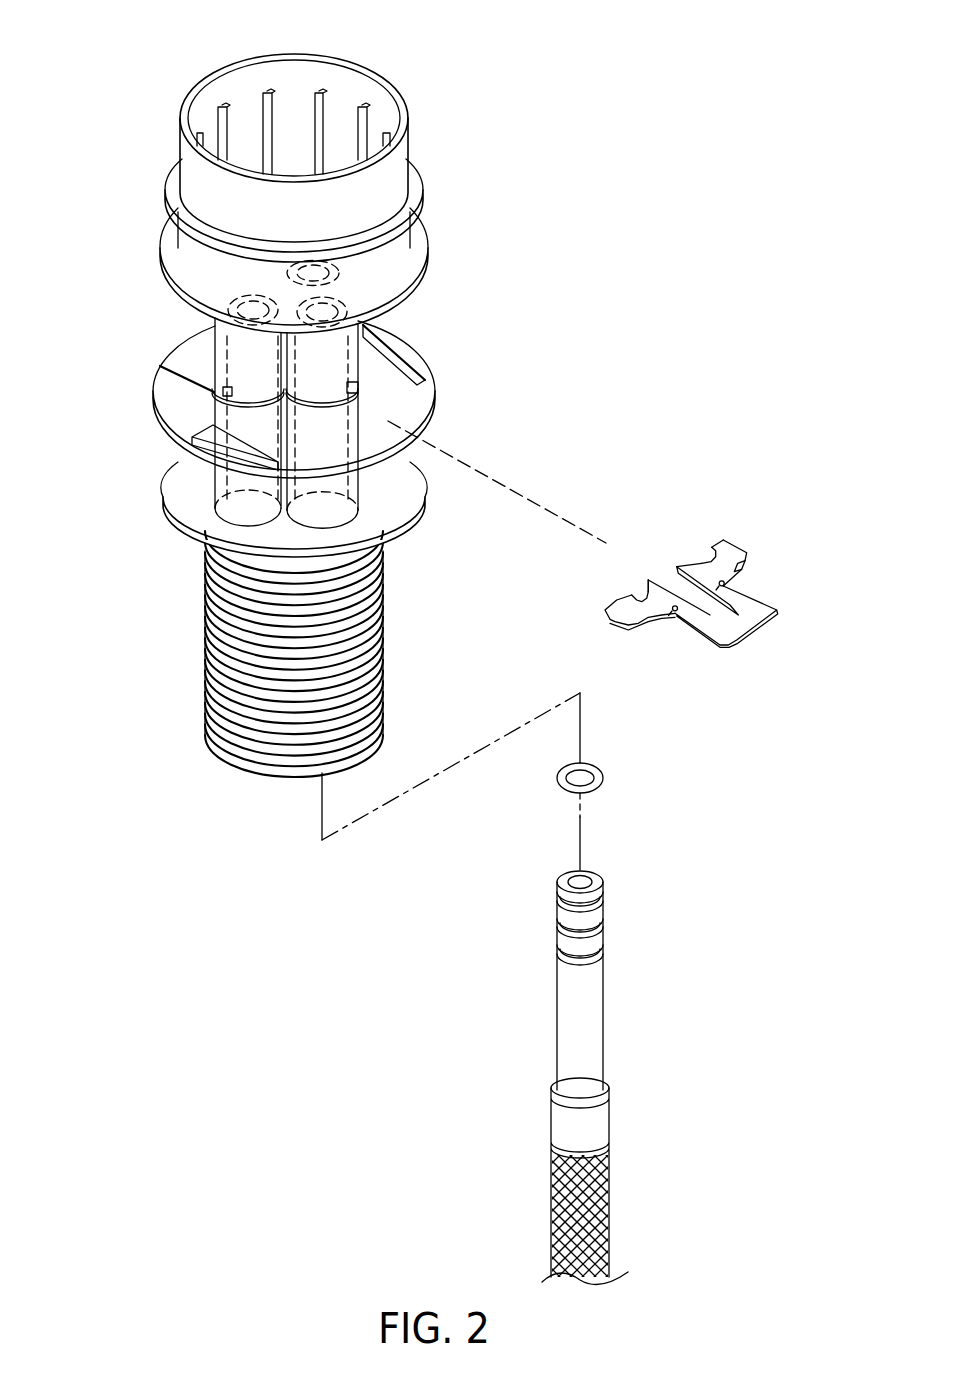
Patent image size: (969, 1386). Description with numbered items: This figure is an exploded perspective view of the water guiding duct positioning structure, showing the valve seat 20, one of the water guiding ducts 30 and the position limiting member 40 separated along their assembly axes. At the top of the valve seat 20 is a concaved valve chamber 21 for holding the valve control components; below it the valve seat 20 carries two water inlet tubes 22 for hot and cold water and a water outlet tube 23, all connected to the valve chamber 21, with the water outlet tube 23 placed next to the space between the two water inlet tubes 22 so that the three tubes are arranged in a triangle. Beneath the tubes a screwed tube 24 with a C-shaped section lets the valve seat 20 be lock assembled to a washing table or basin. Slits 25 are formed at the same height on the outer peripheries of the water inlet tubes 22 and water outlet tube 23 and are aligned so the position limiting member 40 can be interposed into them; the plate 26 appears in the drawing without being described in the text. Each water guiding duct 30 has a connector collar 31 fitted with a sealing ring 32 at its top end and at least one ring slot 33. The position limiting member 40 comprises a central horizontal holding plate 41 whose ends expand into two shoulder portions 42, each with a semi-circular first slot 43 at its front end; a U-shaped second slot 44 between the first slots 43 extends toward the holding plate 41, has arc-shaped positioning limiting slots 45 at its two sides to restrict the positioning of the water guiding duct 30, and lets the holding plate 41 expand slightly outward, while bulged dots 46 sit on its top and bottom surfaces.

The valve seat 20 is at (158, 110).
The valve chamber 21 is at (348, 95).
The water inlet tubes 22 is at (350, 303).
The water outlet tube 23 is at (360, 495).
The screwed tube 24 is at (211, 668).
The slits 25 is at (225, 388).
The insulating plate 26 is at (391, 473).
The water guiding duct 30 is at (626, 1208).
The connector collar 31 is at (566, 1050).
The sealing ring 32 is at (557, 779).
The ring slot 33 is at (605, 952).
The position limiting member 40 is at (707, 645).
The holding plate 41 is at (777, 617).
The shoulder portions 42 is at (725, 539).
The first slot 43 is at (706, 556).
The second slot 44 is at (664, 590).
The arc-shaped positioning limiting slot 45 is at (738, 590).
The bulged dots 46 is at (675, 609).